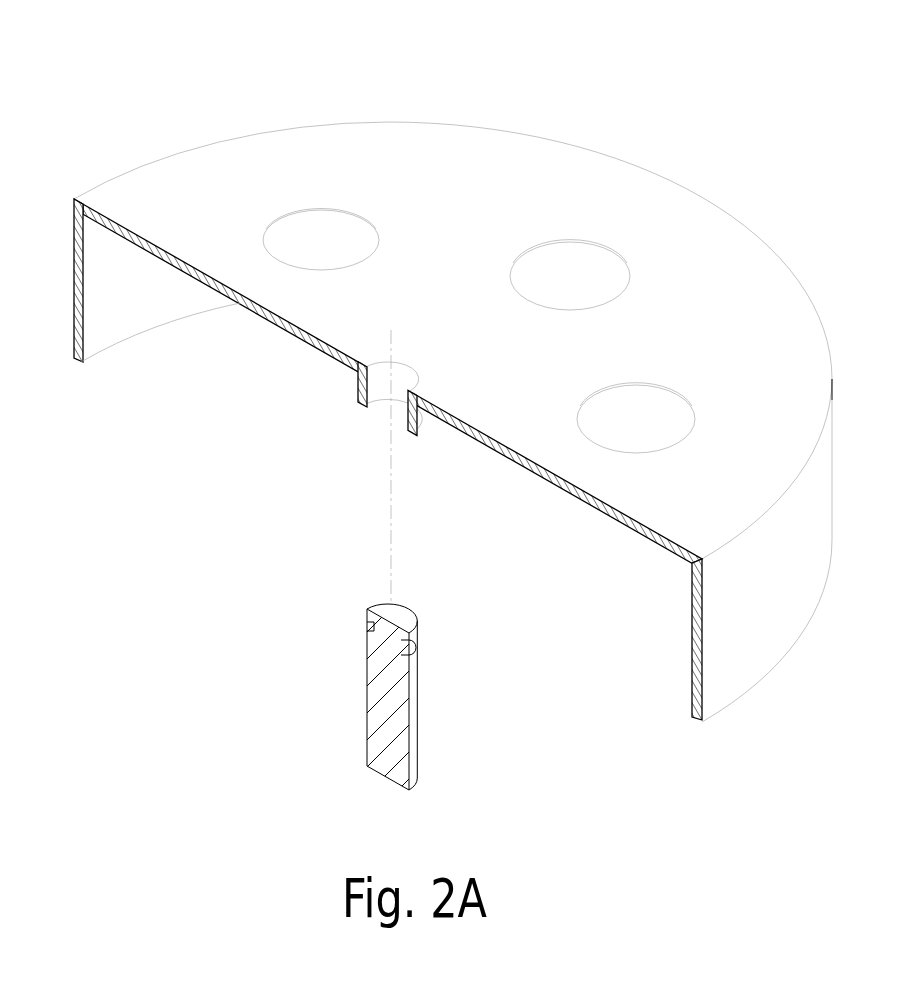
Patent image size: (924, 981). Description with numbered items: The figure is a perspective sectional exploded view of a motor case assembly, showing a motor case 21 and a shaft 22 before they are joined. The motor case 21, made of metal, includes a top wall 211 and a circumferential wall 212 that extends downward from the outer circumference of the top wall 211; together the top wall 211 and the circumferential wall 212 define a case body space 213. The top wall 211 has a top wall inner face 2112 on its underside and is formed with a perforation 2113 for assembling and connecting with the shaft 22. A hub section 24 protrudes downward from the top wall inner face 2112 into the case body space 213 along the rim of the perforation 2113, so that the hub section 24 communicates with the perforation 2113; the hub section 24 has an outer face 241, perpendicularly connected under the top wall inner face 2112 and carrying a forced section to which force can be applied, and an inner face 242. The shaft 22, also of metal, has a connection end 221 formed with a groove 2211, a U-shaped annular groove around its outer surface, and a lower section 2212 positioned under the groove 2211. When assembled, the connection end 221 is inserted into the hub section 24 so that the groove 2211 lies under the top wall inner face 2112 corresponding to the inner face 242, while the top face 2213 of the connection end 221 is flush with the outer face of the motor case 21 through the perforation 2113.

The motor case 21 is at (493, 425).
The top wall 211 is at (453, 302).
The circumferential wall 212 is at (493, 489).
The case body space 213 is at (588, 633).
The top wall inner face 2112 is at (632, 528).
The perforation 2113 is at (398, 360).
The hub section 24 is at (292, 449).
The outer face 241 is at (421, 415).
The inner face 242 is at (388, 416).
The shaft 22 is at (370, 680).
The connection end 221 is at (443, 628).
The groove 2211 is at (370, 625).
The lower section 2212 is at (415, 680).
The top face 2213 is at (400, 617).